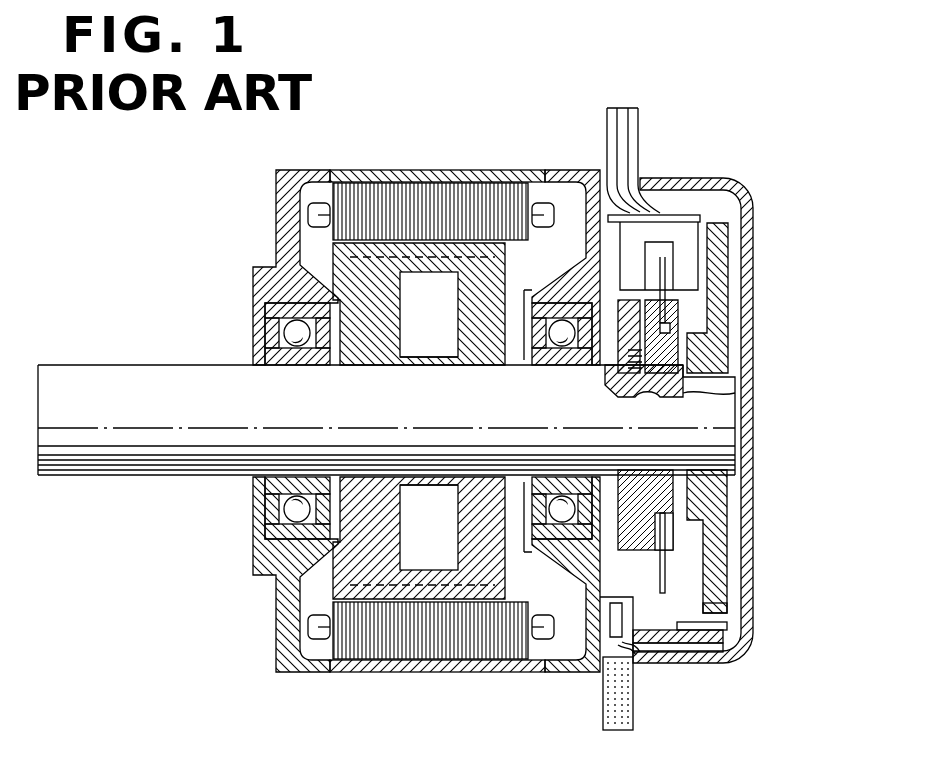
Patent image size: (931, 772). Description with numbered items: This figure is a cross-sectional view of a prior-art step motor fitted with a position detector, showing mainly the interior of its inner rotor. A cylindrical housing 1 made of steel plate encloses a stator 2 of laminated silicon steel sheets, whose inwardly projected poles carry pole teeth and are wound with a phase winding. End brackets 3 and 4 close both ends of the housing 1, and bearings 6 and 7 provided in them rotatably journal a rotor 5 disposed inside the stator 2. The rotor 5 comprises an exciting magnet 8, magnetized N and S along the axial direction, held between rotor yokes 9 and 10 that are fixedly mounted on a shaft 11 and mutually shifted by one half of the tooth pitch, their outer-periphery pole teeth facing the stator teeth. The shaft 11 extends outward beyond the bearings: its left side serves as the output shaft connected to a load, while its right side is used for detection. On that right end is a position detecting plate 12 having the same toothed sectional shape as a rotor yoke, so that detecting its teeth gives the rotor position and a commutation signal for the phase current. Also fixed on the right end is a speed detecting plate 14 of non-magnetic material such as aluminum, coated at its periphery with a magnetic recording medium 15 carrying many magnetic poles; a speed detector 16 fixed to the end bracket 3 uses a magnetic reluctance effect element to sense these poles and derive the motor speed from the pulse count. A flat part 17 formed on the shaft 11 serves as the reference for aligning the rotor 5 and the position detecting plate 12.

The cylindrical housing 1 is at (407, 674).
The stator 2 is at (449, 645).
The end bracket 3 is at (600, 563).
The end bracket 4 is at (275, 625).
The rotor 5 is at (421, 262).
The bearing 6 is at (553, 527).
The bearing 7 is at (252, 522).
The exciting magnet 8 is at (437, 272).
The rotor yoke 9 is at (382, 215).
The rotor yoke 10 is at (485, 262).
The shaft 11 is at (193, 457).
The position detecting plate 12 is at (683, 273).
The speed detecting plate 14 is at (727, 308).
The magnetic recording medium 15 is at (705, 617).
The speed detector 16 is at (707, 628).
The flat part 17 is at (733, 385).